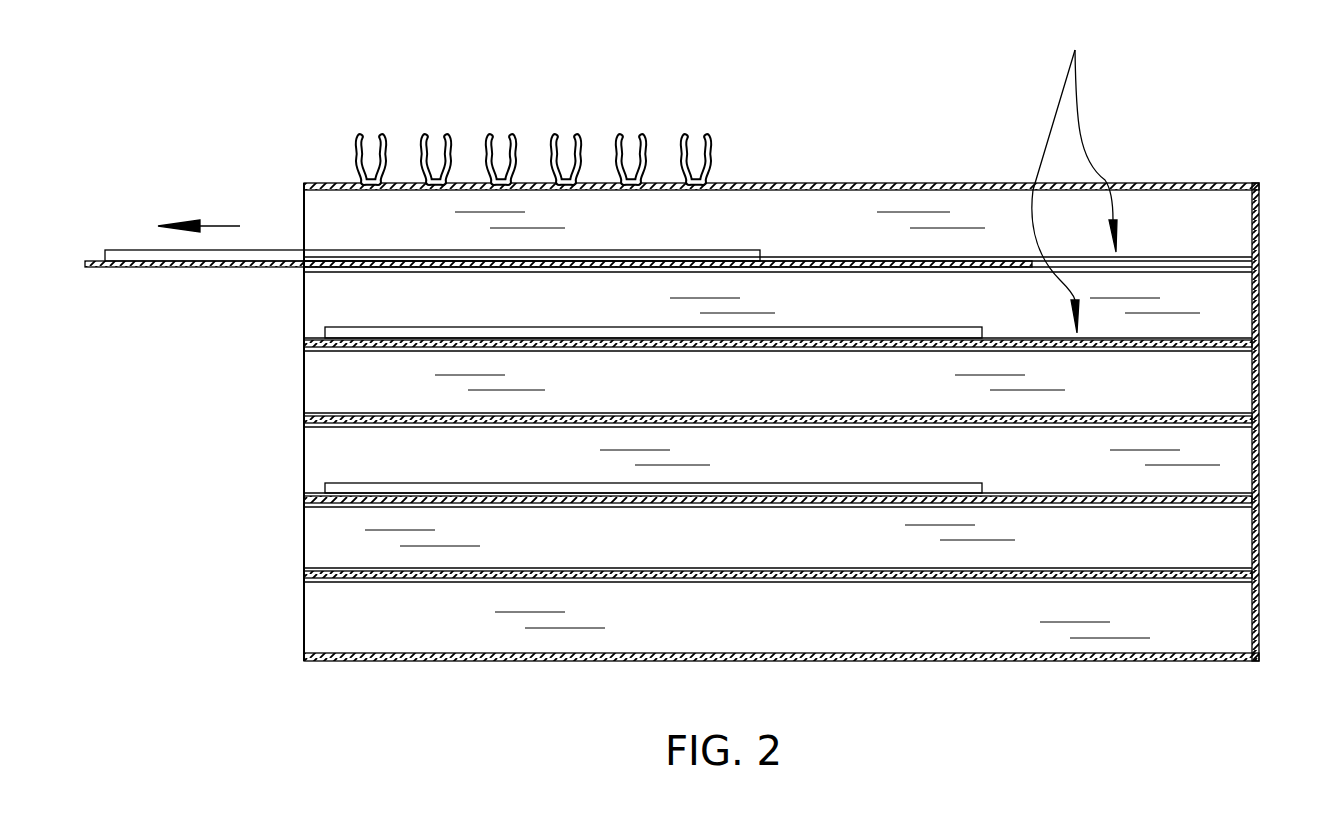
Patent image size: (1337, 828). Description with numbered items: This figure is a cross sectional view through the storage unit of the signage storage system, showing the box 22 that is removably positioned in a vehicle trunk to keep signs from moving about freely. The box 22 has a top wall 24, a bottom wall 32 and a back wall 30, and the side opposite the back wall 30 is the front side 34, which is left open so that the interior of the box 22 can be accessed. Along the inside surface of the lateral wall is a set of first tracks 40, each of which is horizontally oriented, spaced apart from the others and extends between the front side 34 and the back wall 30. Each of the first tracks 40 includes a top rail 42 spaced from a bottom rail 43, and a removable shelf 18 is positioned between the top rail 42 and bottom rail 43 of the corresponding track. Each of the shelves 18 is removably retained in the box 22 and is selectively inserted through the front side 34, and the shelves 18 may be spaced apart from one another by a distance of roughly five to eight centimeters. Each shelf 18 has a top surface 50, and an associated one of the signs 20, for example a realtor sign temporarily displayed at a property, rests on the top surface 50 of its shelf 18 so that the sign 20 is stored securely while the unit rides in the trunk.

The removable shelf 18 is at (182, 268).
The sign 20 is at (350, 483).
The box 22 is at (807, 416).
The top wall 24 is at (845, 183).
The back wall 30 is at (1259, 283).
The bottom wall 32 is at (543, 662).
The front side 34 is at (242, 533).
The first track 40 is at (1074, 172).
The top rail 42 is at (1165, 257).
The bottom rail 43 is at (1200, 273).
The top surface 50 is at (95, 260).